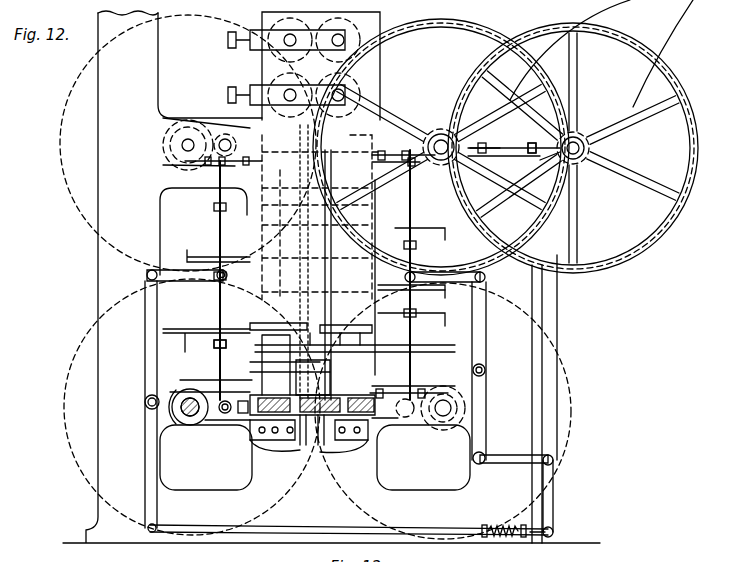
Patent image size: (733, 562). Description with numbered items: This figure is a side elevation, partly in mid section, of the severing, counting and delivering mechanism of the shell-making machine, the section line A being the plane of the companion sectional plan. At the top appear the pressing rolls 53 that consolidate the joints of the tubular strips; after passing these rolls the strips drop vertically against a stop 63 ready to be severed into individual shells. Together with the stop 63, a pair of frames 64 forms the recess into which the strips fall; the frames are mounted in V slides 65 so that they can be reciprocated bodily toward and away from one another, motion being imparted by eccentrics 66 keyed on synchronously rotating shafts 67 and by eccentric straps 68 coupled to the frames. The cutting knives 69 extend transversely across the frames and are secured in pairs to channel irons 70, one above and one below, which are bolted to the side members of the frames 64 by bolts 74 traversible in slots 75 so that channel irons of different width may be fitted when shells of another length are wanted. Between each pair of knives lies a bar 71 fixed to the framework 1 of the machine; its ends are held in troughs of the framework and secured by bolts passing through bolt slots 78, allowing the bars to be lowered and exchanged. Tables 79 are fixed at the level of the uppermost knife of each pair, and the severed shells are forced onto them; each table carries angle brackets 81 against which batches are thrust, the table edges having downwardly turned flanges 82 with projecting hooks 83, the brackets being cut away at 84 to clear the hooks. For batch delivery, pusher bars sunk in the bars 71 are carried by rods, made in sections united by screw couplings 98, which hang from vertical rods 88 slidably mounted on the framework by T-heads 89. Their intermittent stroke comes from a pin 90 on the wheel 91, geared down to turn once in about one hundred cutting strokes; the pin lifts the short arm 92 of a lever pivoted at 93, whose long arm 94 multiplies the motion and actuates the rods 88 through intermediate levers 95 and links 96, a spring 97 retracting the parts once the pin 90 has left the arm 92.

The framework 1 is at (345, 147).
The pressing rolls 53 is at (320, 22).
The stop 63 is at (312, 445).
The frames 64 is at (387, 440).
The V slides 65 is at (275, 442).
The eccentrics 66 is at (192, 426).
The shafts 67 is at (196, 414).
The eccentric straps 68 is at (178, 428).
The cutting knives 69 is at (332, 346).
The channel irons 70 is at (392, 352).
The bar 71 is at (285, 335).
The bolts 74 is at (250, 364).
The slots 75 is at (278, 360).
The bolt slots 78 is at (302, 446).
The tables 79 is at (430, 228).
The angle brackets 81 is at (210, 256).
The flanges 82 is at (211, 347).
The hooks 83 is at (446, 238).
The cut-away 84 is at (310, 377).
The vertical rods 88 is at (222, 296).
The T-heads 89 is at (205, 163).
The pin 90 is at (548, 152).
The wheel 91 is at (486, 134).
The short arm 92 is at (533, 143).
The lever pivot 93 is at (548, 162).
The long arm 94 is at (558, 326).
The intermediate levers 95 is at (145, 438).
The links 96 is at (172, 270).
The spring 97 is at (506, 538).
The screw couplings 98 is at (226, 211).
The section line A— A is at (360, 338).